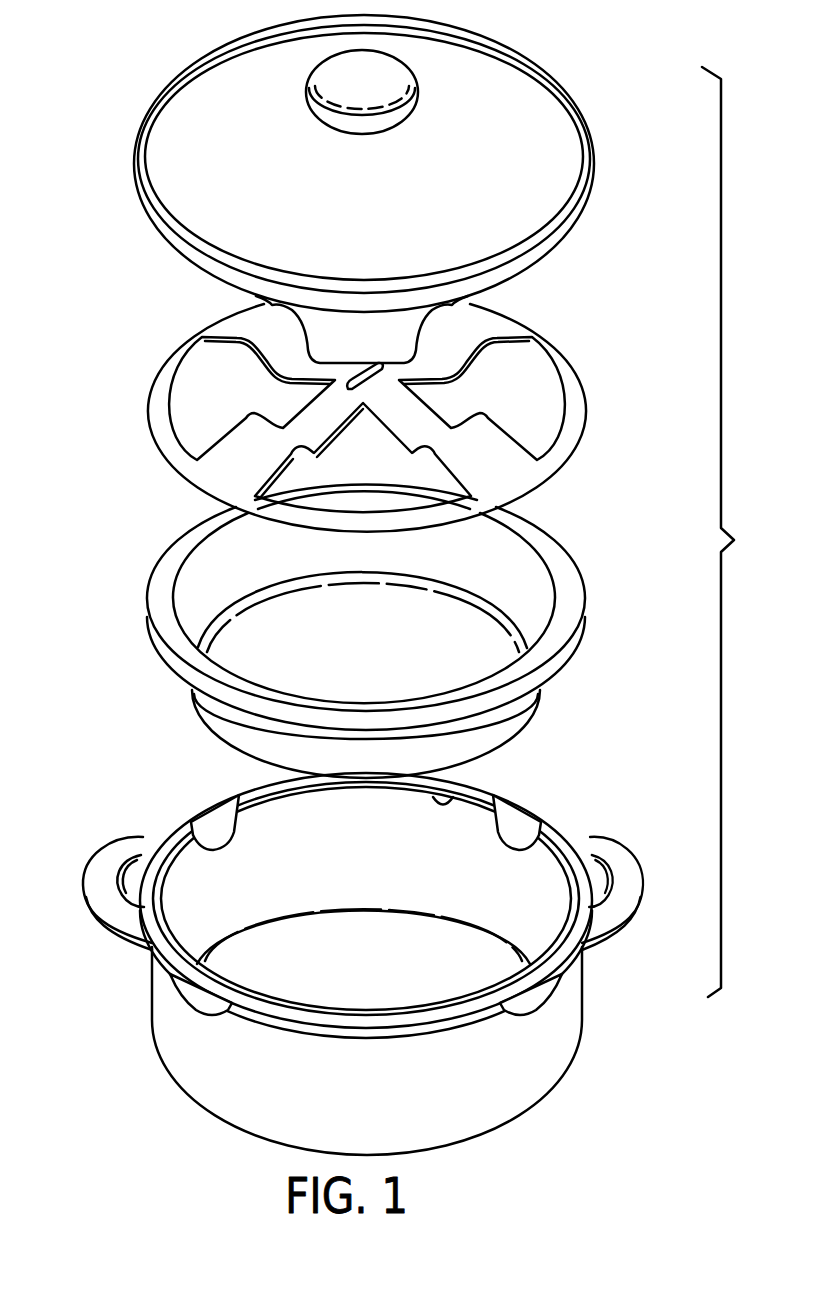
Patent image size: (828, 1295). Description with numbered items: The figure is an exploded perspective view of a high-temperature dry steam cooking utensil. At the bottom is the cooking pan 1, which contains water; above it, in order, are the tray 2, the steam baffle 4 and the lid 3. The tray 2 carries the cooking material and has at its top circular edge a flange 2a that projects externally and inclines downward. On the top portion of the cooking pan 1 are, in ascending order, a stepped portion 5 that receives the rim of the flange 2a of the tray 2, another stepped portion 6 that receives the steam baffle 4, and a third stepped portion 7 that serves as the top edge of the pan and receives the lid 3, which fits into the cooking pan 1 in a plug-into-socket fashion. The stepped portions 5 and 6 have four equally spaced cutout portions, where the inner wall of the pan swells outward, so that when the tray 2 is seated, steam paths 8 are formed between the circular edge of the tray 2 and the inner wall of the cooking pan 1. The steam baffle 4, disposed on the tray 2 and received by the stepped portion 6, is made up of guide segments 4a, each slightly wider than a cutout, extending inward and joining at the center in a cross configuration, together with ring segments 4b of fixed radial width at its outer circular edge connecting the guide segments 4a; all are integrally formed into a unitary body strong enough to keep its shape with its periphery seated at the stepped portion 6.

The cooking pan 1 is at (351, 943).
The tray 2 is at (335, 631).
The flange 2a is at (184, 657).
The lid 3 is at (189, 205).
The steam baffle 4 is at (357, 414).
The guide segments 4a is at (217, 463).
The ring segments 4b is at (572, 417).
The stepped portion 5 is at (427, 805).
The stepped portion 6 is at (550, 830).
The stepped portion 7 is at (550, 806).
The steam paths 8 is at (203, 820).